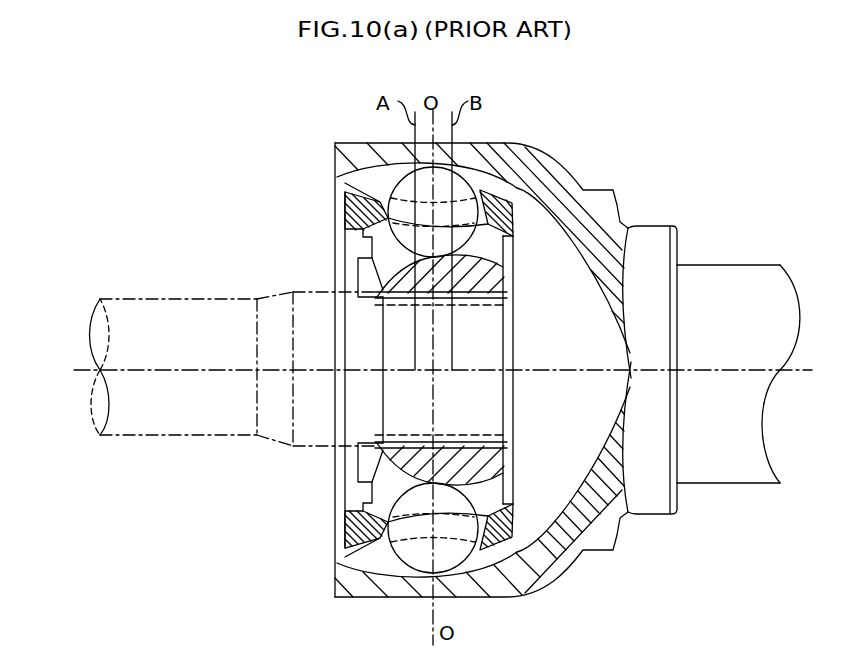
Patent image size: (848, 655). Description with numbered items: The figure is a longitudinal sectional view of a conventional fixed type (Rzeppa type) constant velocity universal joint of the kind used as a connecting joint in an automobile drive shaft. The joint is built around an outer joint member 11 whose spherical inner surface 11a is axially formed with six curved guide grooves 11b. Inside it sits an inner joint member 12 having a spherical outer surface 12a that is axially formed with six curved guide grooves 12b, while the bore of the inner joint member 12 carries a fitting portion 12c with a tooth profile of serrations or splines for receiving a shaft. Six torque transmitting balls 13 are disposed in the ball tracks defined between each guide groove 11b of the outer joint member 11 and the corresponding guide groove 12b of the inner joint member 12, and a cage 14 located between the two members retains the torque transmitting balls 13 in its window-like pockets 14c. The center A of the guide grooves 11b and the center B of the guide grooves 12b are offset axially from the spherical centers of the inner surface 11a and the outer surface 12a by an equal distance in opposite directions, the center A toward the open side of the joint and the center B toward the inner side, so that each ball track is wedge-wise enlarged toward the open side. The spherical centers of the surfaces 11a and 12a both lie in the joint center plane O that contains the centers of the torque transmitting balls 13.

The outer joint member 11 is at (328, 146).
The spherical inner surface 11a is at (497, 540).
The curved guide grooves 11b is at (493, 170).
The inner joint member 12 is at (357, 244).
The spherical outer surface 12a is at (576, 556).
The curved guide grooves 12b is at (487, 258).
The fitting portion 12c is at (476, 308).
The torque transmitting balls 13 is at (376, 186).
The cage 14 is at (518, 197).
The window-like pockets 14c is at (483, 170).